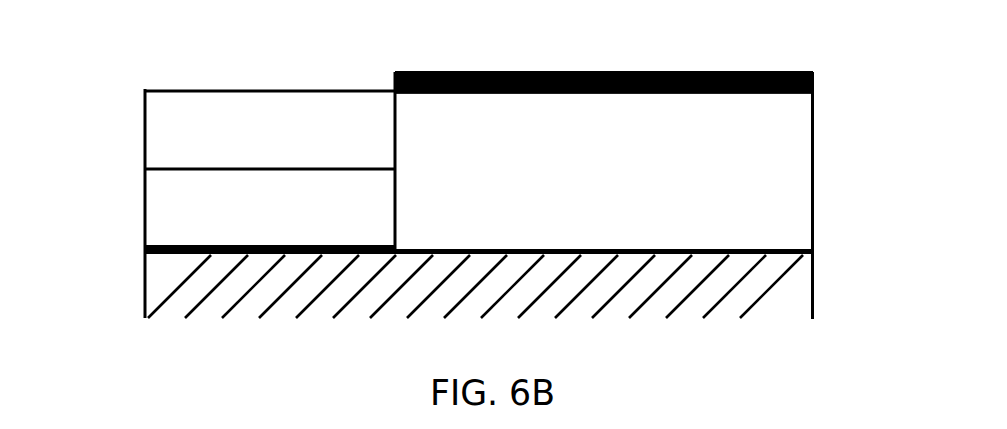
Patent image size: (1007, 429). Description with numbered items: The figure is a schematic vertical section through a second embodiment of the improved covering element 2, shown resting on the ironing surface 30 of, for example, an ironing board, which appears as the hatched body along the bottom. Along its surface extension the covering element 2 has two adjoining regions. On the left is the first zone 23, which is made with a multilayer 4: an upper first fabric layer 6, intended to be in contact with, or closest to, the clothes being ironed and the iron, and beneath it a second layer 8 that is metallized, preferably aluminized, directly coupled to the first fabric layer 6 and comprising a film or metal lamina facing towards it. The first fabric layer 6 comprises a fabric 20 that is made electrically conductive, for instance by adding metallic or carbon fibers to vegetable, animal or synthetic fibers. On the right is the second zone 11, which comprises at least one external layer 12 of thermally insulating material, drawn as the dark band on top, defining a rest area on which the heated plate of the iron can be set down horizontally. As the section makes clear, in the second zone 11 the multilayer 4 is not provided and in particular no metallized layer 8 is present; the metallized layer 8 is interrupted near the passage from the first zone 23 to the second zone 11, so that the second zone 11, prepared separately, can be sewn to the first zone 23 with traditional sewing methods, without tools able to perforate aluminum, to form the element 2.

The improved covering element 2 is at (137, 85).
The first zone 23 is at (334, 87).
The second zone 11 is at (430, 72).
The layer of thermally insulating material 12 is at (518, 80).
The first fabric layer 6 is at (175, 141).
The multilayer 4 is at (146, 169).
The second metallized layer 8 is at (170, 208).
The fabric 20 is at (778, 207).
The ironing surface 30 is at (178, 308).